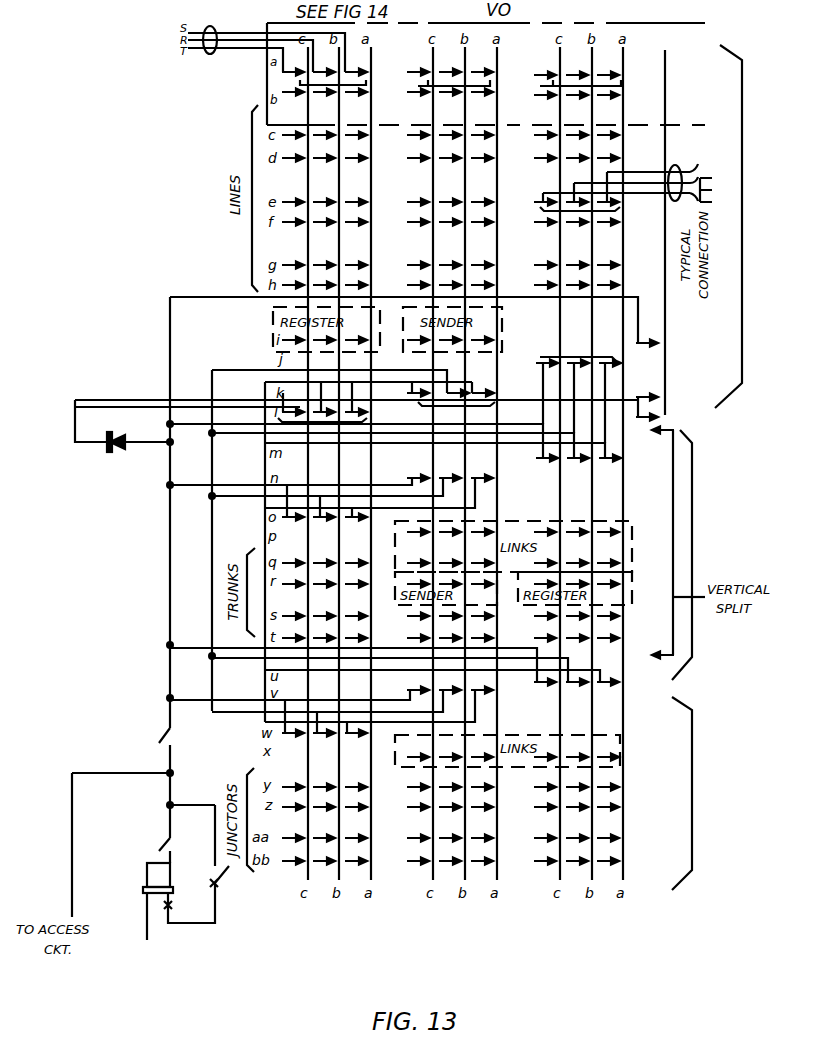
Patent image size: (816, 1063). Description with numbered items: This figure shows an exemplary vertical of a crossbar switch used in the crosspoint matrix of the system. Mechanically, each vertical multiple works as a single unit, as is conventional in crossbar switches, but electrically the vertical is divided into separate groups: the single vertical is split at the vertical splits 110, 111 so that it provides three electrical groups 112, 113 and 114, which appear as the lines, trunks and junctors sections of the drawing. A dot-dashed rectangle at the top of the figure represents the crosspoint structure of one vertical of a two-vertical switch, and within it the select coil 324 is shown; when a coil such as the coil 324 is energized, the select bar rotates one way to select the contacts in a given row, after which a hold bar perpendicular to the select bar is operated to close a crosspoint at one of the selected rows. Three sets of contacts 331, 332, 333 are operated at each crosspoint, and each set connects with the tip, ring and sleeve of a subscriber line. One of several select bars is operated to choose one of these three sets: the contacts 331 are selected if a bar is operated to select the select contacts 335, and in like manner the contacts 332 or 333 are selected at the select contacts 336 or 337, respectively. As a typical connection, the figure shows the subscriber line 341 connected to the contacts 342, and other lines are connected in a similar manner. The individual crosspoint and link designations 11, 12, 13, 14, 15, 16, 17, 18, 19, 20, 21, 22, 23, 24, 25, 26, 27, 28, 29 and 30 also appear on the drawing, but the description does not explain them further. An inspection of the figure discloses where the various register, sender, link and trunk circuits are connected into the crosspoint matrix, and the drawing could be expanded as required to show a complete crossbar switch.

The line crosspoint a-c 11 is at (293, 65).
The line crosspoint b-c 12 is at (293, 100).
The line crosspoint a-b 13 is at (324, 65).
The line crosspoint b-b 14 is at (324, 100).
The line crosspoint a-a 15 is at (356, 65).
The line crosspoint b-a 16 is at (356, 100).
The crosspoint 17 is at (418, 65).
The crosspoint 18 is at (418, 100).
The crosspoint 19 is at (450, 65).
The crosspoint 20 is at (450, 100).
The crosspoint 21 is at (482, 65).
The crosspoint 22 is at (482, 100).
The crosspoint 23 is at (545, 68).
The crosspoint 24 is at (545, 103).
The crosspoint 25 is at (576, 68).
The crosspoint 26 is at (576, 103).
The crosspoint 27 is at (607, 68).
The crosspoint 28 is at (607, 103).
The trunk link connection 29 is at (414, 359).
The vertical split connection 30 is at (650, 541).
The vertical split 110 is at (370, 440).
The vertical split 111 is at (375, 652).
The electrical group 112 is at (742, 222).
The electrical group 113 is at (692, 543).
The electrical group 114 is at (692, 790).
The coil 324 is at (232, 70).
The set of contacts 331 is at (317, 84).
The set of contacts 332 is at (437, 85).
The set of contacts 333 is at (565, 85).
The select contacts 335 is at (322, 425).
The select contacts 336 is at (455, 410).
The select contacts 337 is at (572, 357).
The subscriber line 341 is at (675, 174).
The contacts 342 is at (585, 216).